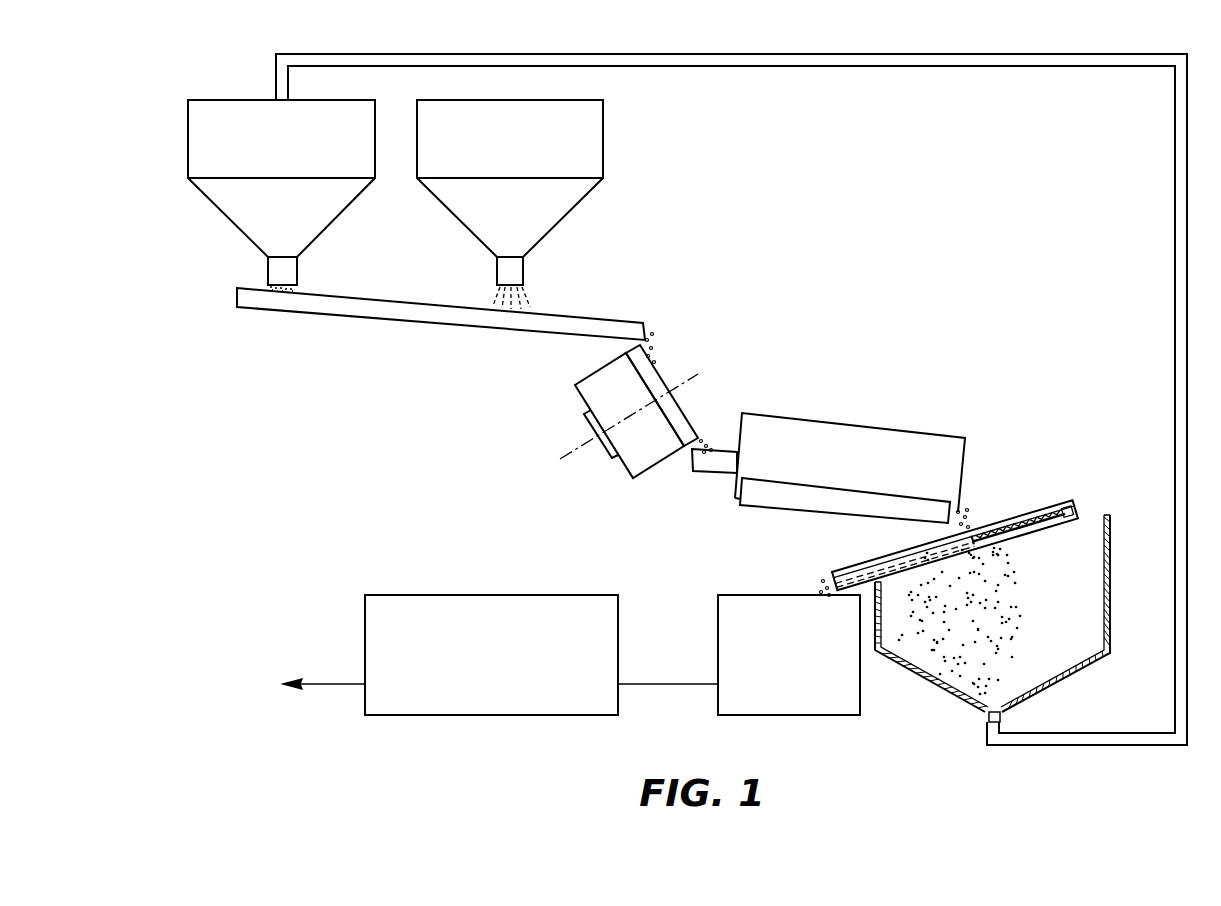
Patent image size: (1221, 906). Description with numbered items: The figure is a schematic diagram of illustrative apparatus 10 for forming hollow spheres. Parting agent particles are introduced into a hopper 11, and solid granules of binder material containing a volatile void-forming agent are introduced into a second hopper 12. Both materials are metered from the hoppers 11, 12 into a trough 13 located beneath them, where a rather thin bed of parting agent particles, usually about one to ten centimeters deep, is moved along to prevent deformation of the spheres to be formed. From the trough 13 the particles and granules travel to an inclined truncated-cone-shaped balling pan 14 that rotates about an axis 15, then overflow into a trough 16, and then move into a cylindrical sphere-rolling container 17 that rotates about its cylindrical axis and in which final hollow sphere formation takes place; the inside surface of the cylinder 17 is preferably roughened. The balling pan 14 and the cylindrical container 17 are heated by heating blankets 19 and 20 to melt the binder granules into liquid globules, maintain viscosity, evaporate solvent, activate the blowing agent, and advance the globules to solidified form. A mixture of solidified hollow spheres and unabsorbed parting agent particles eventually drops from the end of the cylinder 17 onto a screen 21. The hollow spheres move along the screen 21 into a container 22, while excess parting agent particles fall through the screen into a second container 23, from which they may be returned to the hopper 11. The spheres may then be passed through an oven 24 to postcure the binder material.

The apparatus 10 is at (223, 80).
The hopper 11 is at (286, 156).
The hopper 12 is at (519, 152).
The trough 13 is at (388, 320).
The balling pan 14 is at (687, 409).
The axis 15 is at (680, 385).
The trough 16 is at (720, 468).
The cylindrical sphere-rolling container 17 is at (852, 427).
The heating blanket 19 is at (637, 470).
The heating blanket 20 is at (782, 500).
The screen 21 is at (1020, 525).
The container 22 is at (796, 667).
The second container 23 is at (1113, 628).
The oven 24 is at (498, 665).